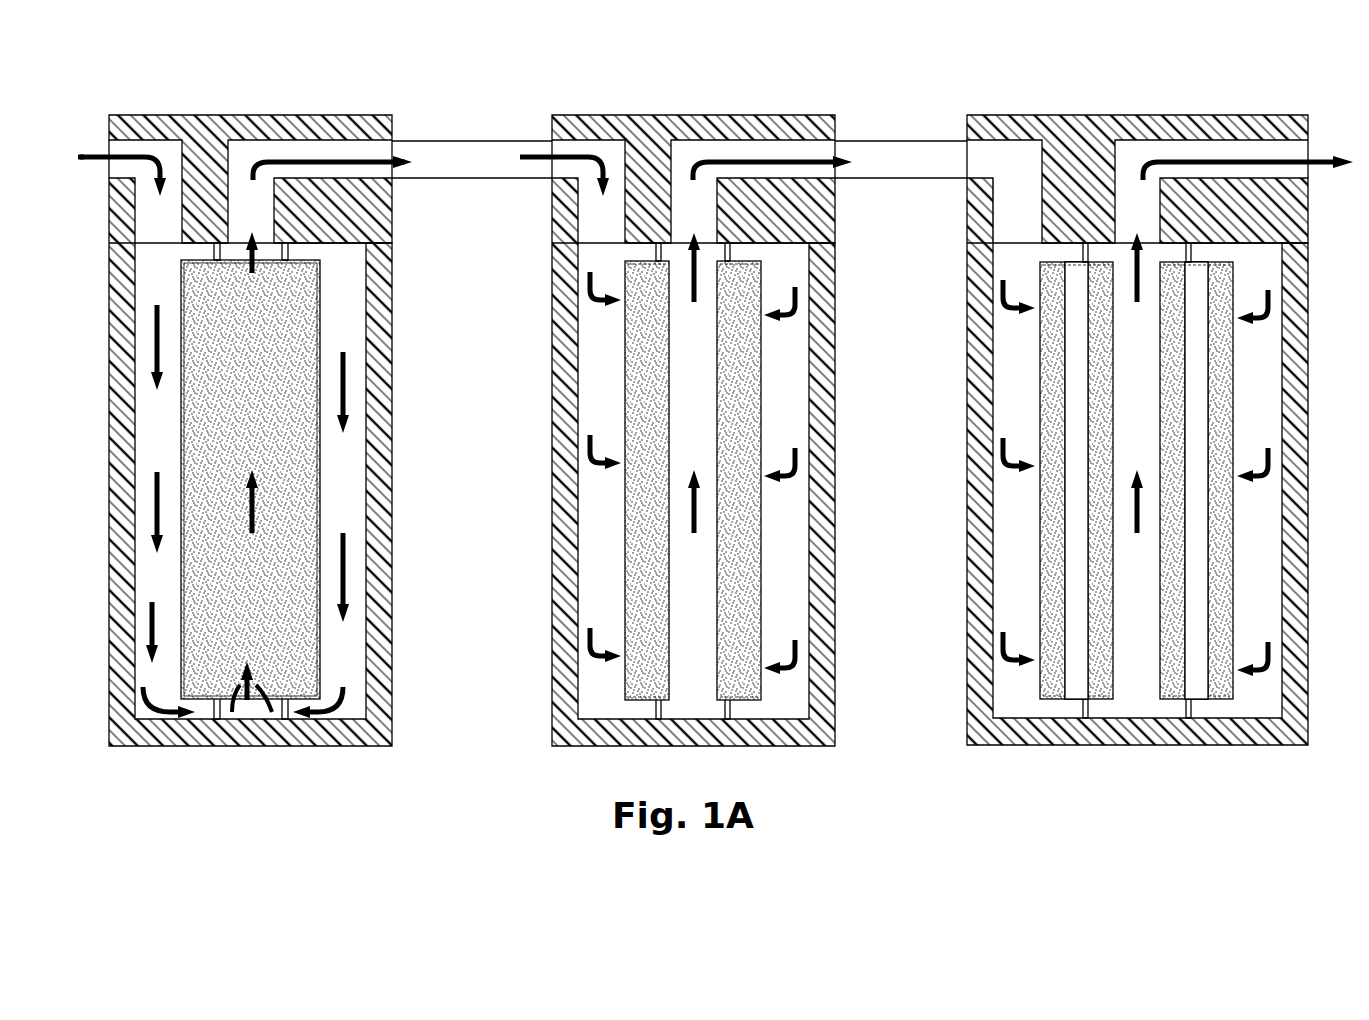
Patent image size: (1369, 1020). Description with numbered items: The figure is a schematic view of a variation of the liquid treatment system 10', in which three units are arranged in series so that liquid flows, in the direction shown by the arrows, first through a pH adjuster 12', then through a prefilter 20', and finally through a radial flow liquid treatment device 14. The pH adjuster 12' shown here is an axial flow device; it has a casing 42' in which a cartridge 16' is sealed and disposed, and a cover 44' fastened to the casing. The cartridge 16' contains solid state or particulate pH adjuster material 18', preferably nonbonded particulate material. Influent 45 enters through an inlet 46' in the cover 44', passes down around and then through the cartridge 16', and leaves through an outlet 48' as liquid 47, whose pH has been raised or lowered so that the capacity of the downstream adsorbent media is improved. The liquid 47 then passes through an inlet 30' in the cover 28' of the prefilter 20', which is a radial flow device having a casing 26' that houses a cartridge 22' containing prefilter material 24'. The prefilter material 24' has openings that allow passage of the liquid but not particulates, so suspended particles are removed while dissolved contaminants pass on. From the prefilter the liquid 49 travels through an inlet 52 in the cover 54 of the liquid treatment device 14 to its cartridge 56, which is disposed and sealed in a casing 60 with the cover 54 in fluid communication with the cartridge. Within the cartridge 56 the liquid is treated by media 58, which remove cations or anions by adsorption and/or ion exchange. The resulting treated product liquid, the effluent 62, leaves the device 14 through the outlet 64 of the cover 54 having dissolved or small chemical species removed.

The system 10' is at (703, 389).
The pH adjuster 12' is at (240, 407).
The radial flow liquid treatment device 14 is at (940, 368).
The cartridge 16' is at (286, 511).
The pH adjuster material 18' is at (189, 475).
The prefilter 20' is at (686, 408).
The cartridge 22' is at (741, 453).
The prefilter material 24' is at (758, 481).
The casing 26' is at (669, 443).
The cover 28' is at (693, 157).
The inlet 30' is at (545, 145).
The casing 42' is at (275, 443).
The cover 44' is at (250, 156).
The influent 45 is at (85, 163).
The inlet 46' is at (103, 145).
The liquid 47 is at (380, 158).
The outlet 48' is at (336, 124).
The liquid 49 is at (820, 158).
The inlet 52 is at (1002, 143).
The cover 54 is at (1127, 113).
The cartridge 56 is at (1012, 503).
The media 58 is at (1077, 382).
The casing 60 is at (1297, 290).
The effluent 62 is at (1300, 160).
The outlet 64 is at (1290, 173).